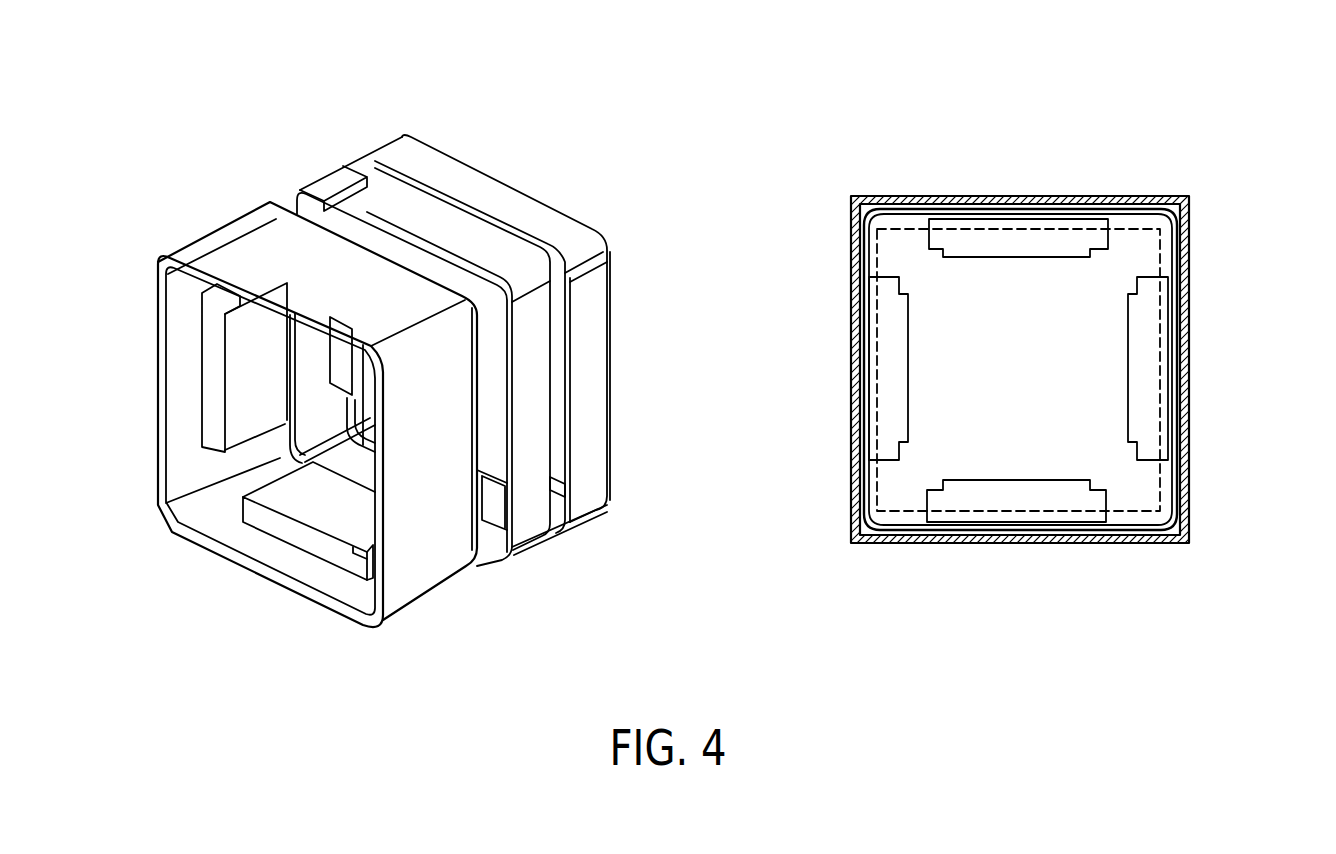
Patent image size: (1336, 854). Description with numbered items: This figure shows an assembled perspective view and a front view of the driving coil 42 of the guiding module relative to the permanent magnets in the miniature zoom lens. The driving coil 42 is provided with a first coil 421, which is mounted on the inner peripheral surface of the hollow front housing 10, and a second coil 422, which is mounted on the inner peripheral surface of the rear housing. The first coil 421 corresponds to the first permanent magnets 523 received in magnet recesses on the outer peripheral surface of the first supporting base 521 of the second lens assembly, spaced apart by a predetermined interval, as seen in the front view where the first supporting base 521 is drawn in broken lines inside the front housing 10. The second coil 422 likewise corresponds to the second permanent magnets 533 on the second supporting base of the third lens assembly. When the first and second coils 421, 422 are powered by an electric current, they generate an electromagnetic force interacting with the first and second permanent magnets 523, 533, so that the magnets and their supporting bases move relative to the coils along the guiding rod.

The front housing 10 is at (1113, 197).
The driving coil 42 is at (343, 62).
The first coil 421 is at (246, 237).
The second coil 422 is at (400, 153).
The first supporting base 521 is at (1193, 237).
The first permanent magnet 523 is at (243, 373).
The second permanent magnet 533 is at (428, 250).